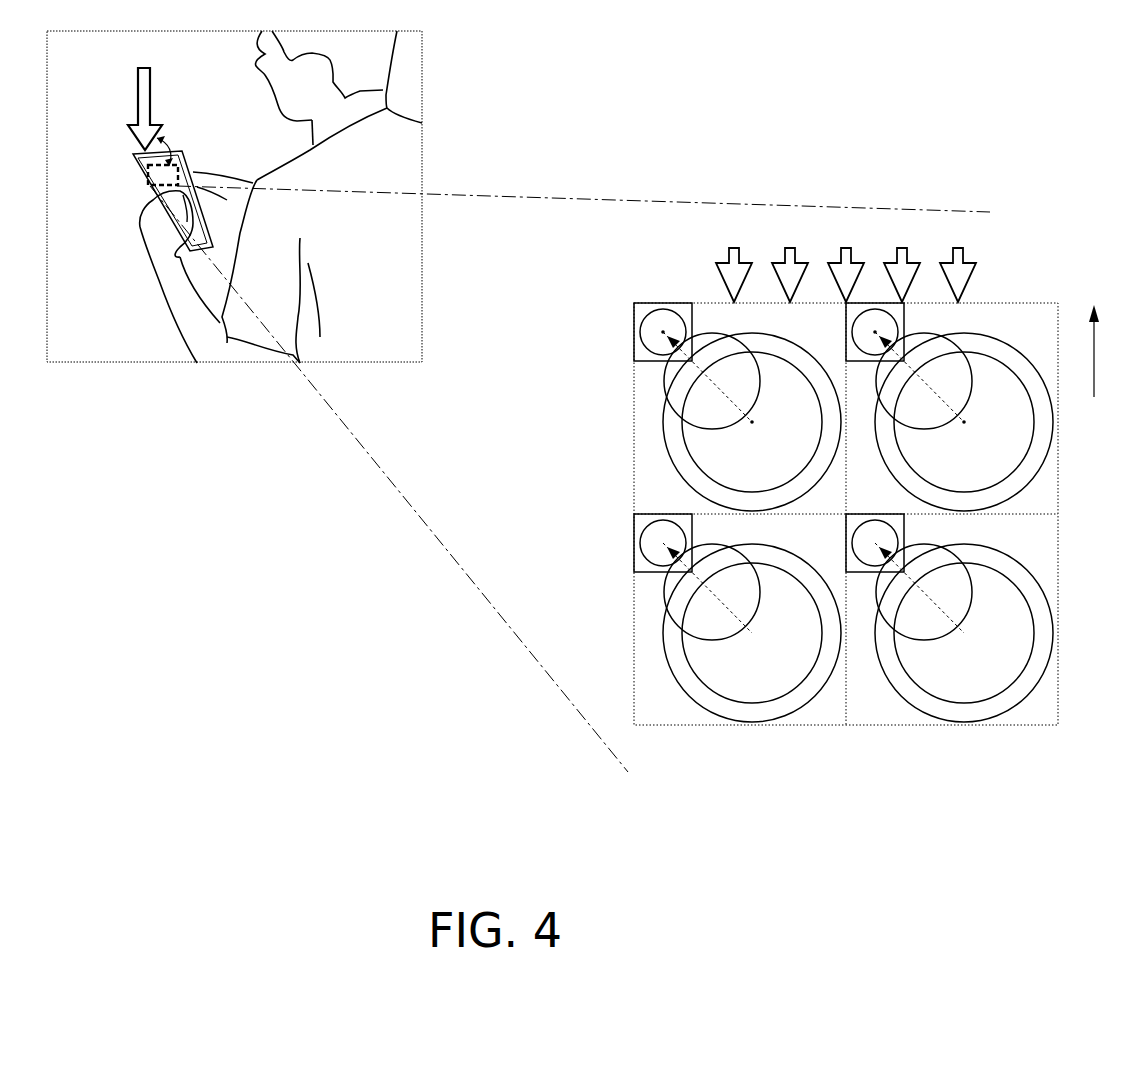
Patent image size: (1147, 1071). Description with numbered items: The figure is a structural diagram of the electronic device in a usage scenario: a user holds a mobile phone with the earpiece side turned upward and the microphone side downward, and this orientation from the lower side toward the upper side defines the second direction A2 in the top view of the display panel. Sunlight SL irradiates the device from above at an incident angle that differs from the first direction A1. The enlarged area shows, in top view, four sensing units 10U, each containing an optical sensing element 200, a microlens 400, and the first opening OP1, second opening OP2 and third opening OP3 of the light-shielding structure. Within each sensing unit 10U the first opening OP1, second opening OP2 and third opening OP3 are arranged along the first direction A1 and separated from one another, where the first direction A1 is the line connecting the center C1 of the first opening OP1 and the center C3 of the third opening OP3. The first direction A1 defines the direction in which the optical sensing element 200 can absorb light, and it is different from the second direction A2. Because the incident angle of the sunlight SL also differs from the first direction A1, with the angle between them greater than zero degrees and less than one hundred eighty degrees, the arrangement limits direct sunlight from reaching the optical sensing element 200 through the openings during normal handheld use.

The optical sensing element 200 is at (638, 312).
The first opening OP1 is at (642, 345).
The second opening OP2 is at (664, 387).
The third opening OP3 is at (689, 453).
The microlens 400 is at (717, 495).
The center of the first opening C1 is at (663, 326).
The center of the third opening C3 is at (775, 428).
The first direction A1 is at (987, 430).
The second direction A2 is at (1115, 351).
The sensing unit 10U is at (827, 712).
The sunlight SL is at (550, 167).